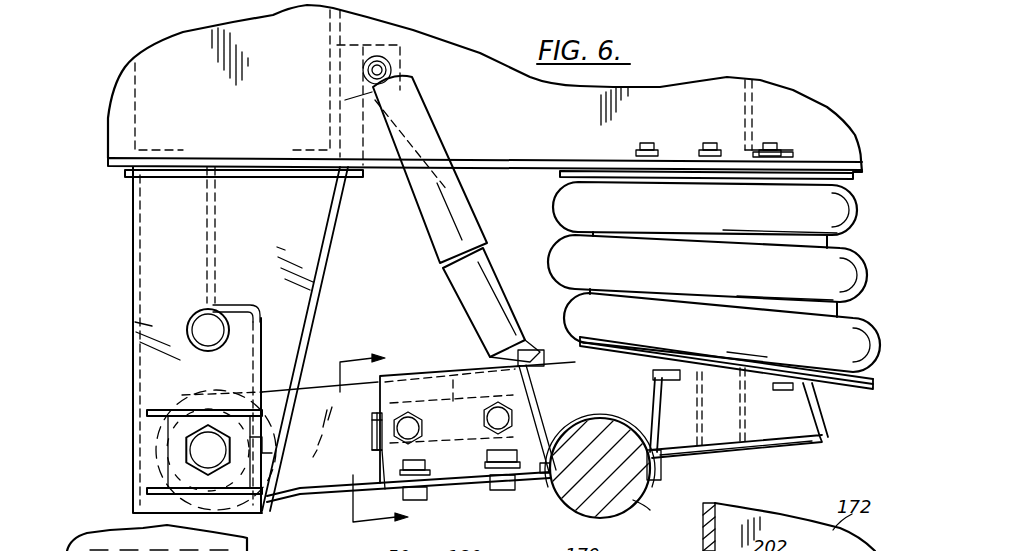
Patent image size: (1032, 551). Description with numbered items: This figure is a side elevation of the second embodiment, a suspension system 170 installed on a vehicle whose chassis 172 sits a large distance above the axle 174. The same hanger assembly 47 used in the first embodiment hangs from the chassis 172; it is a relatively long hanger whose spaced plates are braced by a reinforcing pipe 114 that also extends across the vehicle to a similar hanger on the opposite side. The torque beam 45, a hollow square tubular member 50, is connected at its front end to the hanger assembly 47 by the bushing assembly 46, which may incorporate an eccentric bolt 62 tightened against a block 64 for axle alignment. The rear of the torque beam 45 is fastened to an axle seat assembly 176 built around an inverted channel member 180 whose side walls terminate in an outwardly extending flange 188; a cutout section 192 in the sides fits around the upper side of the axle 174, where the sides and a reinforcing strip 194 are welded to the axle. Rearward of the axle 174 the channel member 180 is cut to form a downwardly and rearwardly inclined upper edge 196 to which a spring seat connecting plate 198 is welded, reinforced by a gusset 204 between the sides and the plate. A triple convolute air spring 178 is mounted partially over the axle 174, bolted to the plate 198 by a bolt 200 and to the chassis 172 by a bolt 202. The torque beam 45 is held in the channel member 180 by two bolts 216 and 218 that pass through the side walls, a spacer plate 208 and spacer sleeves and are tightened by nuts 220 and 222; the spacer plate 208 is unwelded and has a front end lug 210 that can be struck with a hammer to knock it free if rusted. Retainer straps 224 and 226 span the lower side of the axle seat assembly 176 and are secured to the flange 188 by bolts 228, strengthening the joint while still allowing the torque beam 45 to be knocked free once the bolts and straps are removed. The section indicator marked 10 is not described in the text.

The section line / view direction 10 is at (391, 438).
The torque beam 45 is at (333, 504).
The bushing assembly 46 is at (143, 444).
The hanger assembly 47 is at (121, 295).
The hollow tubular member 50 is at (312, 396).
The eccentric bolt 62 is at (187, 449).
The block 64 is at (238, 469).
The reinforcing pipe 114 is at (227, 313).
The suspension system 170 is at (485, 89).
The chassis 172 is at (688, 88).
The axle 174 is at (623, 530).
The axle seat assembly 176 is at (748, 462).
The air spring 178 is at (872, 245).
The inverted channel member 180 is at (437, 357).
The outwardly extending flange 188 is at (444, 482).
The cutout section 192 is at (648, 487).
The reinforcing strip 194 is at (585, 417).
The inclined upper edge 196 is at (868, 335).
The spring seat connecting plate 198 is at (860, 393).
The bolt 200 is at (657, 378).
The bolt 202 is at (767, 140).
The reinforcing gusset 204 is at (736, 462).
The spacer plate 208 is at (467, 370).
The front end lug 210 is at (372, 420).
The bolt 216 is at (418, 402).
The bolt 218 is at (490, 444).
The nut 220 is at (372, 434).
The nut 222 is at (526, 352).
The retainer strap 224 is at (385, 489).
The retainer strap 226 is at (570, 540).
The bolt 228 is at (433, 500).